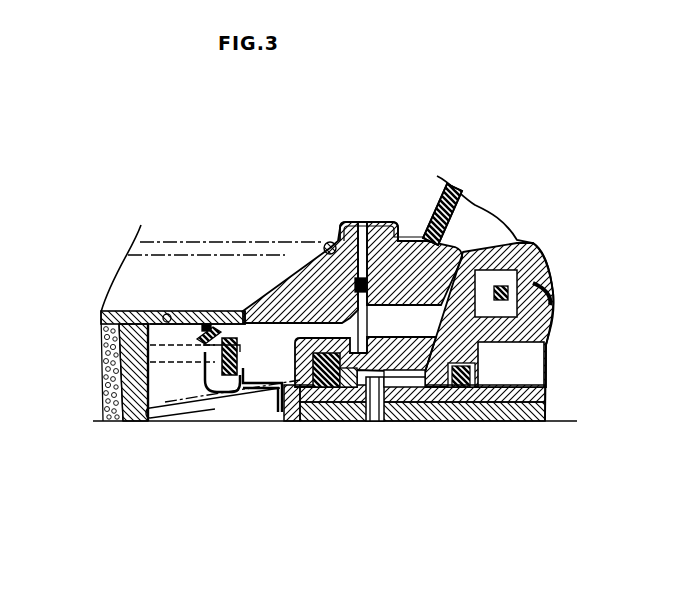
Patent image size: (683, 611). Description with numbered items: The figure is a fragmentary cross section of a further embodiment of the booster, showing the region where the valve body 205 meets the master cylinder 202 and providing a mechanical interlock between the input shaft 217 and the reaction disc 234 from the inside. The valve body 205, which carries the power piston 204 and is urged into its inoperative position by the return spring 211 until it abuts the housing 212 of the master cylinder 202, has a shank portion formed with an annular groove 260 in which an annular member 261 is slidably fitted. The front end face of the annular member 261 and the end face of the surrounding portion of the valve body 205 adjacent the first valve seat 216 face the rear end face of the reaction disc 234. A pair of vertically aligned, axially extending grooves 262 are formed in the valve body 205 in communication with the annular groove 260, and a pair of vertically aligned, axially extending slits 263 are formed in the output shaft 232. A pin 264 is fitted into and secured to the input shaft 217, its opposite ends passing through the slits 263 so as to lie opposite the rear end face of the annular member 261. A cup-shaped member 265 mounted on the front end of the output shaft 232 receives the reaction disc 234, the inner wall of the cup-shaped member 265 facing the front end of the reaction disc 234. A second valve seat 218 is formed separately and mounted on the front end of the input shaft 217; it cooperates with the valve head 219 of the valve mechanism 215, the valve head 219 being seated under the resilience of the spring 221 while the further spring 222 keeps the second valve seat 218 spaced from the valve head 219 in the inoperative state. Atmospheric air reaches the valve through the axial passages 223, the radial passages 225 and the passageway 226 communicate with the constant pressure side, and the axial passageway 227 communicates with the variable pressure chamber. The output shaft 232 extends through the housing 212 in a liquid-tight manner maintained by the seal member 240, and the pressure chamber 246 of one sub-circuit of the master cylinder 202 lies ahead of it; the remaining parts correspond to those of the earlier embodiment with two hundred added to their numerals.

The master cylinder 202 is at (549, 292).
The power piston 204 is at (446, 186).
The valve body 205 is at (360, 218).
The return spring 211 is at (340, 236).
The housing of the master cylinder 212 is at (555, 318).
The valve mechanism 215 is at (233, 393).
The first valve seat 216 is at (243, 310).
The input shaft 217 is at (529, 428).
The second valve seat 218 is at (258, 390).
The valve head 219 is at (222, 338).
The spring 221 is at (200, 330).
The spring 222 is at (167, 422).
The axial passages 223 is at (118, 349).
The radial passages 225 is at (150, 386).
The passageway 226 is at (164, 316).
The axial passageway 227 is at (466, 270).
The output shaft 232 is at (524, 396).
The reaction disc 234 is at (298, 396).
The seal member 240 is at (464, 388).
The pressure chamber 246 is at (522, 360).
The annular groove 260 is at (346, 390).
The annular member 261 is at (340, 380).
The axially extending grooves 262 is at (429, 366).
The slits 263 is at (371, 394).
The pin 264 is at (386, 408).
The cup-shaped member 265 is at (326, 242).